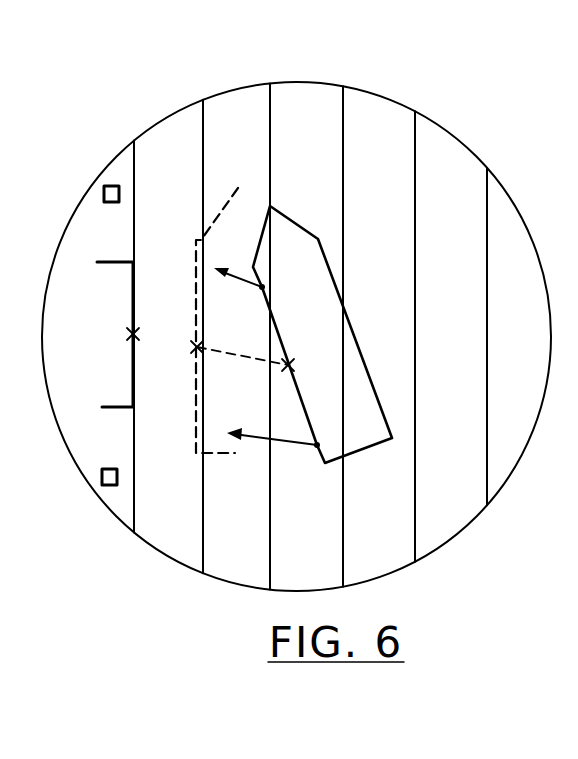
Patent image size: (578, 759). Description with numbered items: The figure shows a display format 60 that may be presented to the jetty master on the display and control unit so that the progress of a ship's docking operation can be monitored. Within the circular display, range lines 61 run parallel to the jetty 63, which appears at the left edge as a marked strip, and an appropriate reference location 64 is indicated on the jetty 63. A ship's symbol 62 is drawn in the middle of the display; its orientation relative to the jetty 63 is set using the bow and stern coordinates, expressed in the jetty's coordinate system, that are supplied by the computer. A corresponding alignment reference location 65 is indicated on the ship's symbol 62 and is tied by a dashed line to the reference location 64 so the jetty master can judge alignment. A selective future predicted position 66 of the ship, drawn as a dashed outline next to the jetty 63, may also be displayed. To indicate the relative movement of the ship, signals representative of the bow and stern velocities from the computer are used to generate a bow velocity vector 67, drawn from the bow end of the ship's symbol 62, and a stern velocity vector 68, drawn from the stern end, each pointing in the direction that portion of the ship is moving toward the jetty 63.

The enlarged fragmentary view of fabric 60 is at (128, 58).
The range lines 61 is at (273, 100).
The ship's symbol 62 is at (353, 326).
The jetty 63 is at (135, 284).
The reference location 64 is at (130, 334).
The alignment reference location 65 is at (290, 362).
The future predicted position 66 is at (222, 210).
The bow velocity vector 67 is at (260, 285).
The stern velocity vector 68 is at (294, 444).